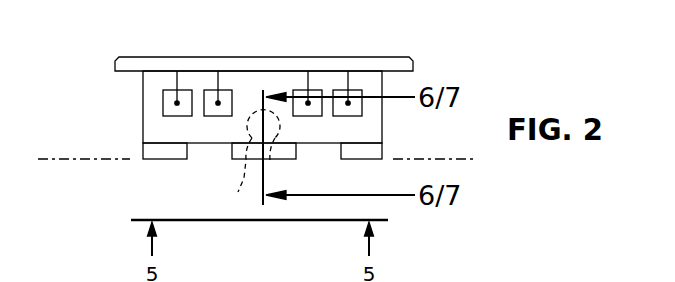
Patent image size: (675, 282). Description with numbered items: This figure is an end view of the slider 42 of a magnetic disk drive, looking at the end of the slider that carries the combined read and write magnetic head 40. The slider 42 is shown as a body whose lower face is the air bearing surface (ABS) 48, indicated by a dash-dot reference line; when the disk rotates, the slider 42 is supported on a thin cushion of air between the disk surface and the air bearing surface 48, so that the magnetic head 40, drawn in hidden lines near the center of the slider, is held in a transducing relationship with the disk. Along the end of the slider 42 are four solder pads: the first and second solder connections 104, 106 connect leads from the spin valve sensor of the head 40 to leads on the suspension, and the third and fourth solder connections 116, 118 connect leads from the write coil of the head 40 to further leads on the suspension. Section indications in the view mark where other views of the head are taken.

The slider 42 is at (143, 103).
The first solder connection 104 is at (163, 97).
The third solder connection 116 is at (204, 97).
The fourth solder connection 118 is at (296, 90).
The second solder connection 106 is at (337, 90).
The magnetic head 40 is at (241, 190).
The air bearing surface 48 is at (63, 160).